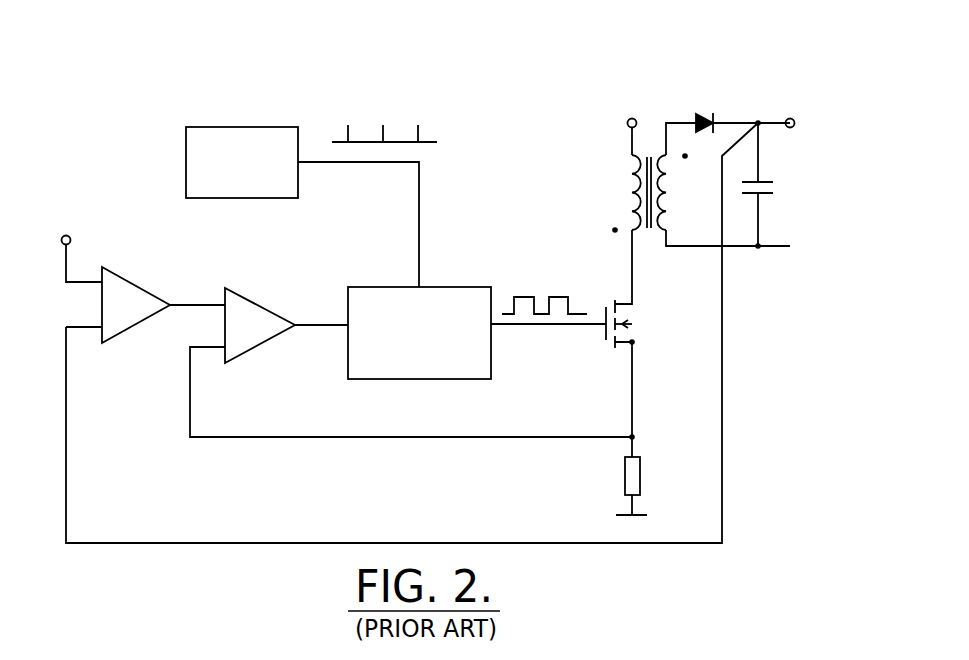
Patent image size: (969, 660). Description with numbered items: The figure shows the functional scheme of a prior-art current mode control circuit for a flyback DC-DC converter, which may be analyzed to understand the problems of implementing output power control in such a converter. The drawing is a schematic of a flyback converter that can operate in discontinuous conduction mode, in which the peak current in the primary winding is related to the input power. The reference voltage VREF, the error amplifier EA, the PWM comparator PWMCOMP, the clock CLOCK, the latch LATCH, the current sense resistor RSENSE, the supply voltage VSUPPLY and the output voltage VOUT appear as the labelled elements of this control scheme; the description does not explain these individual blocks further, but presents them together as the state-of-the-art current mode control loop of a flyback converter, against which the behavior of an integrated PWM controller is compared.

The reference voltage input VREF is at (68, 247).
The error amplifier EA is at (145, 300).
The PWM comparator PWMCOMP is at (411, 349).
The clock CLOCK is at (311, 206).
The latch LATCH is at (477, 333).
The current sense resistor RSENSE is at (584, 476).
The supply voltage input VSUPPLY is at (629, 117).
The output voltage VOUT is at (790, 109).